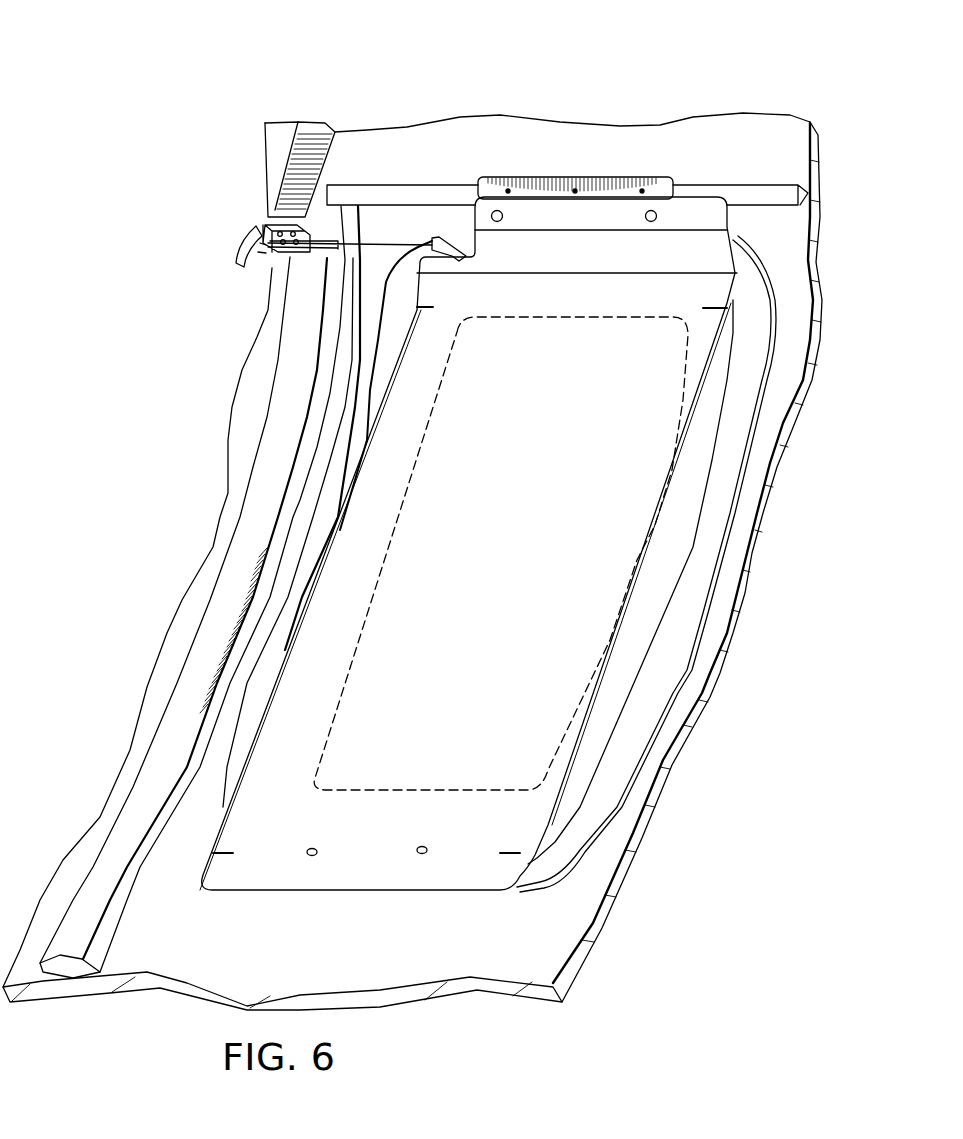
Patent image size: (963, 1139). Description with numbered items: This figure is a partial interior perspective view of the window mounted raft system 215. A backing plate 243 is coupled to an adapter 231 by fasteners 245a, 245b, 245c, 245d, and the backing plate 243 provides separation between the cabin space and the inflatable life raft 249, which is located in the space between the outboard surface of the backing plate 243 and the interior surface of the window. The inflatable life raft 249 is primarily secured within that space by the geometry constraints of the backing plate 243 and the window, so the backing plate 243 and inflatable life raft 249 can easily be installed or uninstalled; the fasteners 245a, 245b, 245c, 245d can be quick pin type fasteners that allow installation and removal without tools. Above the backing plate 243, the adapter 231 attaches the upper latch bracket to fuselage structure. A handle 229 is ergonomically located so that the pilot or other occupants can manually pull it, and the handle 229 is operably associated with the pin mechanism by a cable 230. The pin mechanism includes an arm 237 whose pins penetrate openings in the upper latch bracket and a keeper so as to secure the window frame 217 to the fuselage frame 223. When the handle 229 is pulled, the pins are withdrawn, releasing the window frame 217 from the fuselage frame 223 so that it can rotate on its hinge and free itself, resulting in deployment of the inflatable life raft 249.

The raft system 215 is at (340, 90).
The window frame 217 is at (717, 455).
The fuselage frame 223 is at (657, 677).
The handle 229 is at (235, 243).
The cable 230 is at (407, 243).
The adapter 231 is at (645, 177).
The arm 237 is at (460, 250).
The backing plate 243 is at (347, 893).
The fastener 245a is at (497, 222).
The fastener 245b is at (652, 222).
The fastener 245c is at (307, 848).
The fastener 245d is at (460, 830).
The inflatable life raft 249 is at (387, 793).